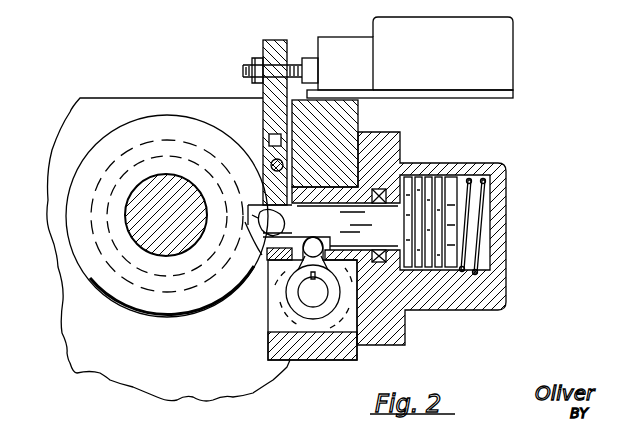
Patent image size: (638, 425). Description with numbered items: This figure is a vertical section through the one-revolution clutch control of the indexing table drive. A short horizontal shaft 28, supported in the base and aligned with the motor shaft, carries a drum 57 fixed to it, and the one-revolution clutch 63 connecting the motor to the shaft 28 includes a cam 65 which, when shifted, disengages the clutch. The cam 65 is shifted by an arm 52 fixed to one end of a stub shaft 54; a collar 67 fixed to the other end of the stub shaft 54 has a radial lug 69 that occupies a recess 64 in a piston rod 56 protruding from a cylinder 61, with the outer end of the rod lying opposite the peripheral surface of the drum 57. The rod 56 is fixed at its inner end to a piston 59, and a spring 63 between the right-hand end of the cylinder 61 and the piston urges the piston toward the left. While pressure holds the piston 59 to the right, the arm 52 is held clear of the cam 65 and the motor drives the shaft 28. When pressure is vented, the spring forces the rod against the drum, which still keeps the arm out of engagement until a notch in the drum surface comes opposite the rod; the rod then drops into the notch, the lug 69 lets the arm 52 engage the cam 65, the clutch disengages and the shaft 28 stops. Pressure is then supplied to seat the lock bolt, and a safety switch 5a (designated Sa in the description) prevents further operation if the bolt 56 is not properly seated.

The safety switch 5a is at (466, 66).
The shaft 28 is at (153, 252).
The arm 52 is at (225, 155).
The stub shaft 54 is at (320, 300).
The piston rod 56 is at (403, 178).
The drum 57 is at (142, 127).
The piston 59 is at (458, 185).
The cylinder 61 is at (468, 317).
The spring 63 is at (465, 222).
The recess 64 is at (378, 197).
The cam 65 is at (127, 150).
The collar 67 is at (337, 303).
The radial lug 69 is at (267, 262).